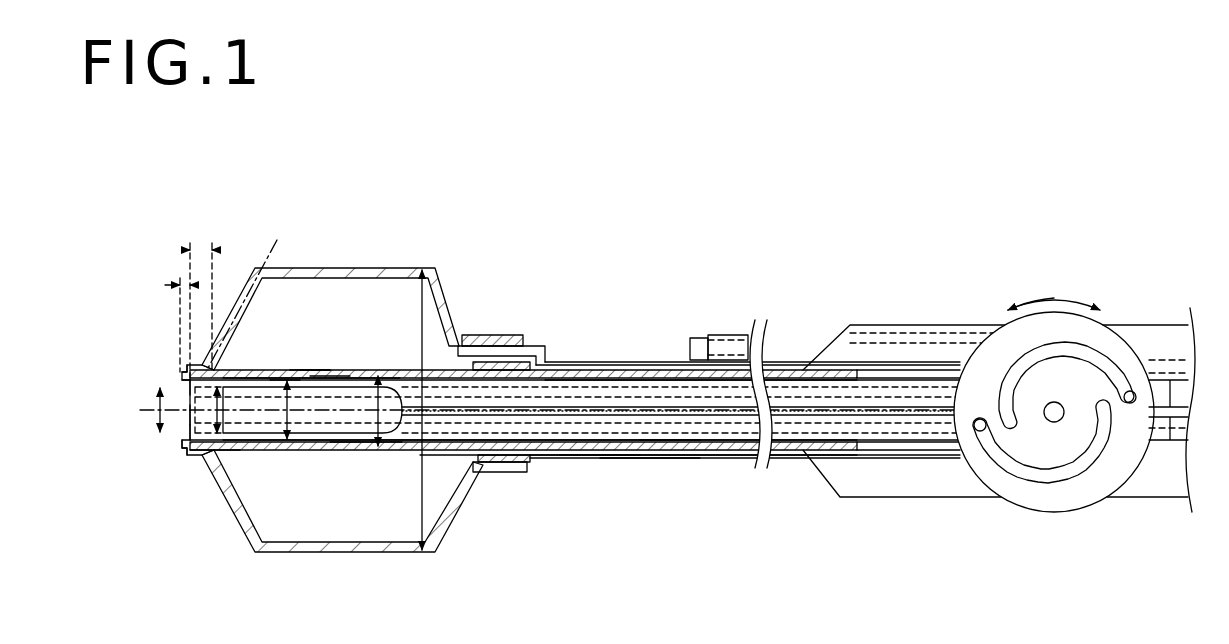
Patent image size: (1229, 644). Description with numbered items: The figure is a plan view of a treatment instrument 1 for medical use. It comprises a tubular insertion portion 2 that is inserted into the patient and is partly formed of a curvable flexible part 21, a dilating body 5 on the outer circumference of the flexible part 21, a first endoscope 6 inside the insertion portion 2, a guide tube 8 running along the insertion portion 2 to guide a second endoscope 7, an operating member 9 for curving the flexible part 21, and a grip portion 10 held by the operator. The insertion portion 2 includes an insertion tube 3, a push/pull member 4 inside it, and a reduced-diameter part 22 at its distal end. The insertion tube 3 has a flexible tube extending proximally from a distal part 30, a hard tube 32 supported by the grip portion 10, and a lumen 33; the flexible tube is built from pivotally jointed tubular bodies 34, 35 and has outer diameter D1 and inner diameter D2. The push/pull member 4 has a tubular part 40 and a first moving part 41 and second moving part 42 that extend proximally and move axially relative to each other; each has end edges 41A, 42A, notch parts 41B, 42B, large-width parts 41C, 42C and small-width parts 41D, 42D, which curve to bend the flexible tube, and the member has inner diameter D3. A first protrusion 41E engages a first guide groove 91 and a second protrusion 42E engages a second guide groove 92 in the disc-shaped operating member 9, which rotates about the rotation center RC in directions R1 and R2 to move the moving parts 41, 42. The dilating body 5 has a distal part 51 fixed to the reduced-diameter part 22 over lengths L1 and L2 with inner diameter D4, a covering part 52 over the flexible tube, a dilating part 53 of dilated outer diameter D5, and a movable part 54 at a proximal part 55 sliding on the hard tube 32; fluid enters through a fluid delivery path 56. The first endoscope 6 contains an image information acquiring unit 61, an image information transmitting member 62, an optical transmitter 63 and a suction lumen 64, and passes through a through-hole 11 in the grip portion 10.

The treatment instrument 1 is at (746, 184).
The insertion portion 2 is at (665, 490).
The insertion tube 3 is at (609, 457).
The push/pull member 4 is at (655, 443).
The dilating body 5 is at (247, 261).
The first endoscope 6 is at (191, 417).
The second endoscope 7 is at (694, 336).
The guide tube 8 is at (793, 334).
The operating member 9 is at (1073, 519).
The grip portion 10 is at (921, 313).
The through-hole 11 is at (890, 377).
The flexible part 21 is at (312, 370).
The reduced-diameter part 22 is at (207, 445).
The distal part 30 is at (190, 364).
The hard tube 32 is at (628, 376).
The lumen 33 is at (668, 384).
The tubular body 34 is at (222, 448).
The tubular body 35 is at (318, 438).
The tubular part 40 is at (184, 447).
The first moving part 41 is at (823, 381).
The circumferentially-end edge 41A is at (577, 411).
The notch part 41B is at (338, 376).
The large-width part 41C is at (597, 385).
The small-width part 41D is at (373, 378).
The first protrusion 41E is at (1136, 392).
The second moving part 42 is at (812, 452).
The end edge 42A is at (557, 419).
The notch part 42B is at (356, 430).
The large-width part 42C is at (588, 440).
The small-width part 42D is at (371, 441).
The second protrusion 42E is at (980, 432).
The distal part 51 is at (187, 366).
The covering part 52 is at (330, 372).
The dilating part 53 is at (328, 267).
The movable part 54 is at (481, 457).
The proximal part 55 is at (508, 473).
The fluid delivery path 56 is at (535, 343).
The image information acquiring unit 61 is at (183, 392).
The image information transmitting member 62 is at (285, 383).
The optical transmitter 63 is at (183, 379).
The lumen 64 is at (186, 432).
The first guide groove 91 is at (1058, 342).
The second guide groove 92 is at (1035, 481).
The rotation center RC is at (1050, 416).
The direction R1 is at (1069, 306).
The direction R2 is at (1017, 306).
The outer diameter of flexible tube D1 is at (378, 432).
The inner diameter of flexible tube D2 is at (288, 421).
The inner diameter of push/pull member D3 is at (223, 421).
The inner diameter of distal part D4 is at (158, 420).
The outer diameter of dilating part D5 is at (422, 420).
The length L1 is at (203, 244).
The length L2 is at (183, 281).